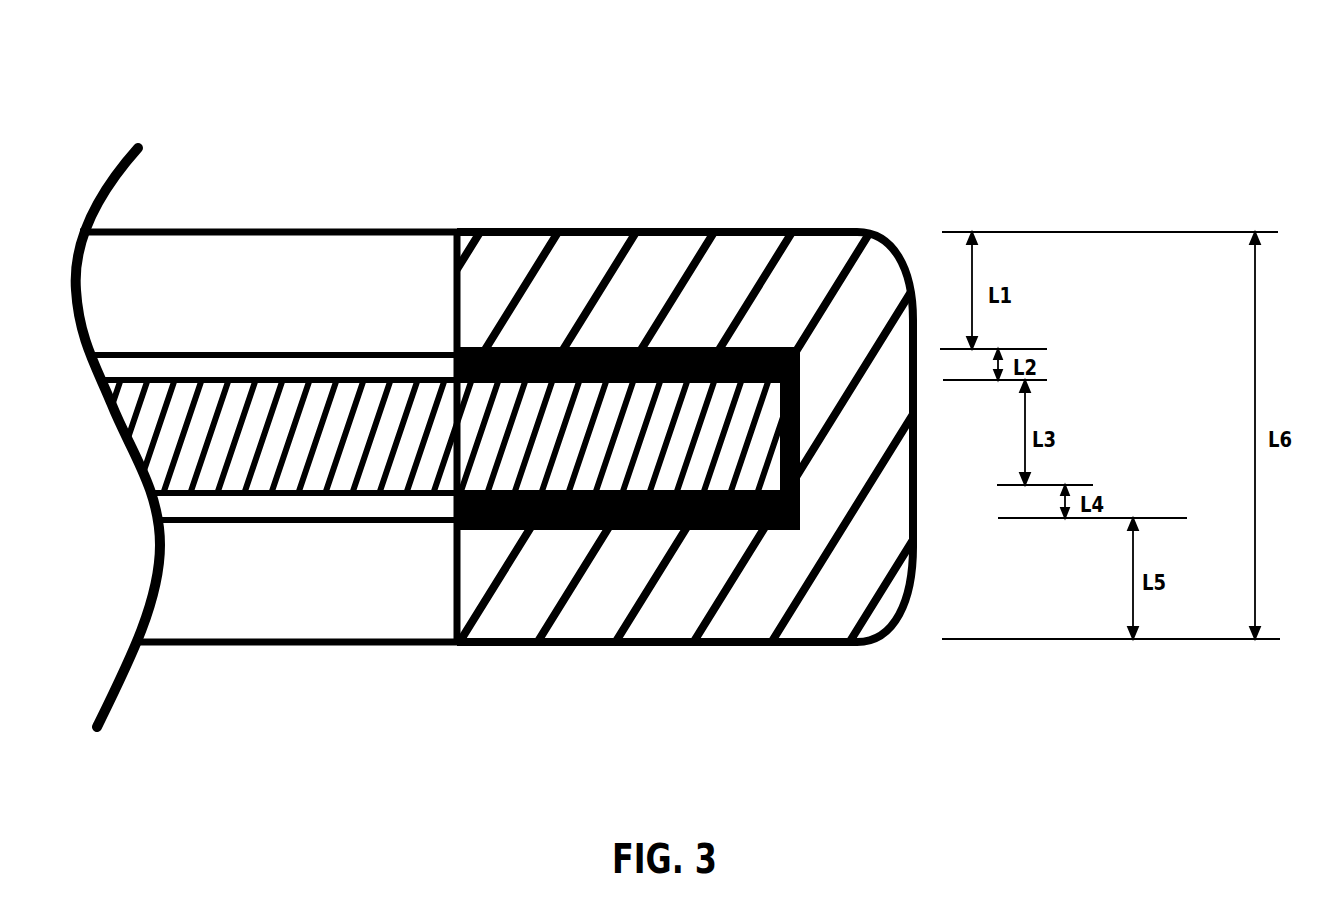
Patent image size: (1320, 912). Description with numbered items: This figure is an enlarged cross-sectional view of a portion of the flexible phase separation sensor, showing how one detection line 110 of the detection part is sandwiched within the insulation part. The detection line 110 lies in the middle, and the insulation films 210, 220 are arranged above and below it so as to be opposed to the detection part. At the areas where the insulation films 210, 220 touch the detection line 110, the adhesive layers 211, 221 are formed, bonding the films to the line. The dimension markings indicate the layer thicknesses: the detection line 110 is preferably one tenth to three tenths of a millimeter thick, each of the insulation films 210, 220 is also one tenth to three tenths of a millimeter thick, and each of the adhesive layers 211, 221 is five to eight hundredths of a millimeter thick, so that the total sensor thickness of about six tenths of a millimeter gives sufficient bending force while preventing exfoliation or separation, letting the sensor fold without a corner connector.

The detection line 110 is at (227, 400).
The insulation film 210 is at (517, 257).
The adhesive layer 211 is at (617, 347).
The insulation film 220 is at (517, 607).
The adhesive layer 221 is at (623, 527).